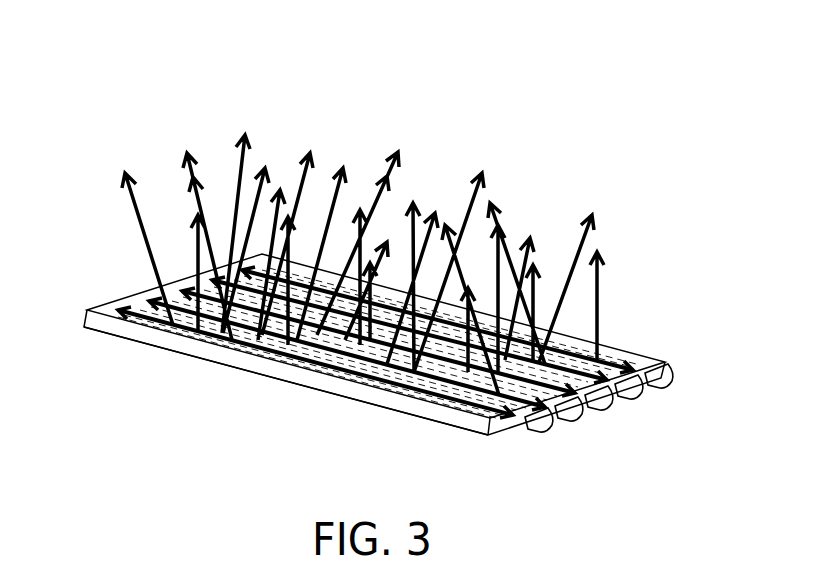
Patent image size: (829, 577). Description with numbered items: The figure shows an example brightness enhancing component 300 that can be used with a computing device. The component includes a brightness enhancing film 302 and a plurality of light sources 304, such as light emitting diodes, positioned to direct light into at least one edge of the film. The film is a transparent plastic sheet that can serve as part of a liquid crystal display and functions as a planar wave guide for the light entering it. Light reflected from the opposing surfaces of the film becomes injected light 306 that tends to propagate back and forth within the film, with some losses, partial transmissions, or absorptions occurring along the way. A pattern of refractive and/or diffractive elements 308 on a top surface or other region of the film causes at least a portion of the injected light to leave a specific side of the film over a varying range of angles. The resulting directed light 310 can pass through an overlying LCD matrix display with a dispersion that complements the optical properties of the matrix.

The brightness enhancing component 300 is at (778, 107).
The brightness enhancing film 302 is at (84, 320).
The light sources 304 is at (558, 432).
The injected light 306 is at (142, 316).
The refractive and/or diffractive elements 308 is at (293, 366).
The directed light 310 is at (146, 238).